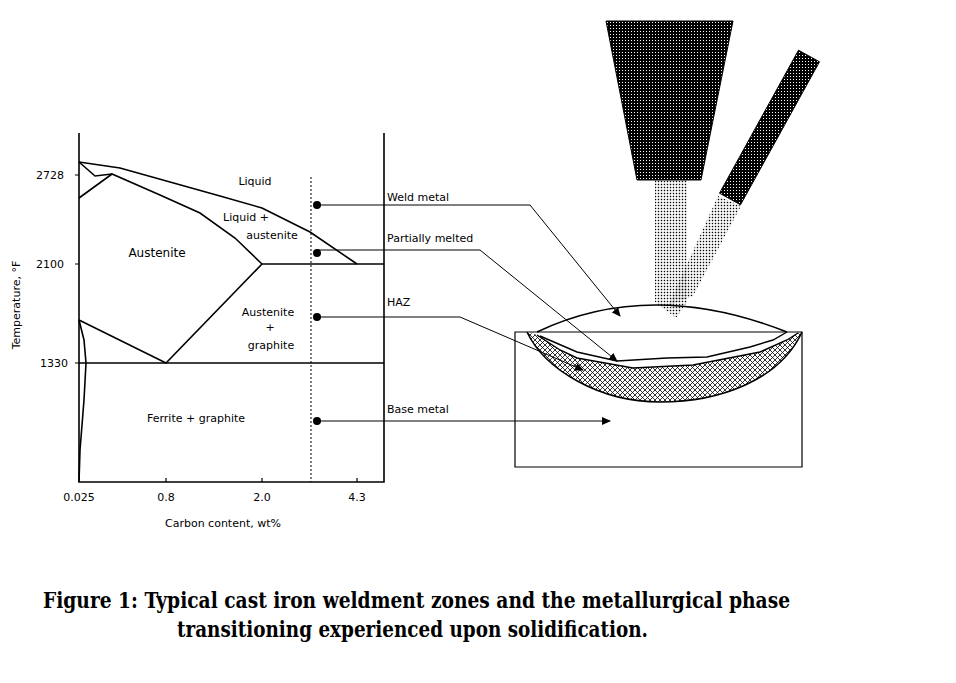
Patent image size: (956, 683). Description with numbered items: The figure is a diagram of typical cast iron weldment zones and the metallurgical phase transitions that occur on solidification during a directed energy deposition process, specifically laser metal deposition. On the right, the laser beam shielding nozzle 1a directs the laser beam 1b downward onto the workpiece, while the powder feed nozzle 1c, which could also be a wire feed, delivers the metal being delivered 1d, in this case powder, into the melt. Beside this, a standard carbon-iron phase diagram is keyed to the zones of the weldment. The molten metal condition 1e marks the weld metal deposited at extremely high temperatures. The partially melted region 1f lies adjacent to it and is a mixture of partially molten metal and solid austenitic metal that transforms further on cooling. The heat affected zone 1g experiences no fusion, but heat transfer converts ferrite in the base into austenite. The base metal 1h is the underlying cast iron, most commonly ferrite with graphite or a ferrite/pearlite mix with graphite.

The laser beam shielding nozzle 1a is at (669, 100).
The laser beam 1b is at (638, 249).
The powder feed nozzle 1c is at (791, 127).
The metal being delivered 1d is at (727, 251).
The molten metal condition 1e is at (317, 205).
The partially melted region 1f is at (317, 253).
The heat affected zone 1g is at (319, 319).
The base metal 1h is at (319, 423).